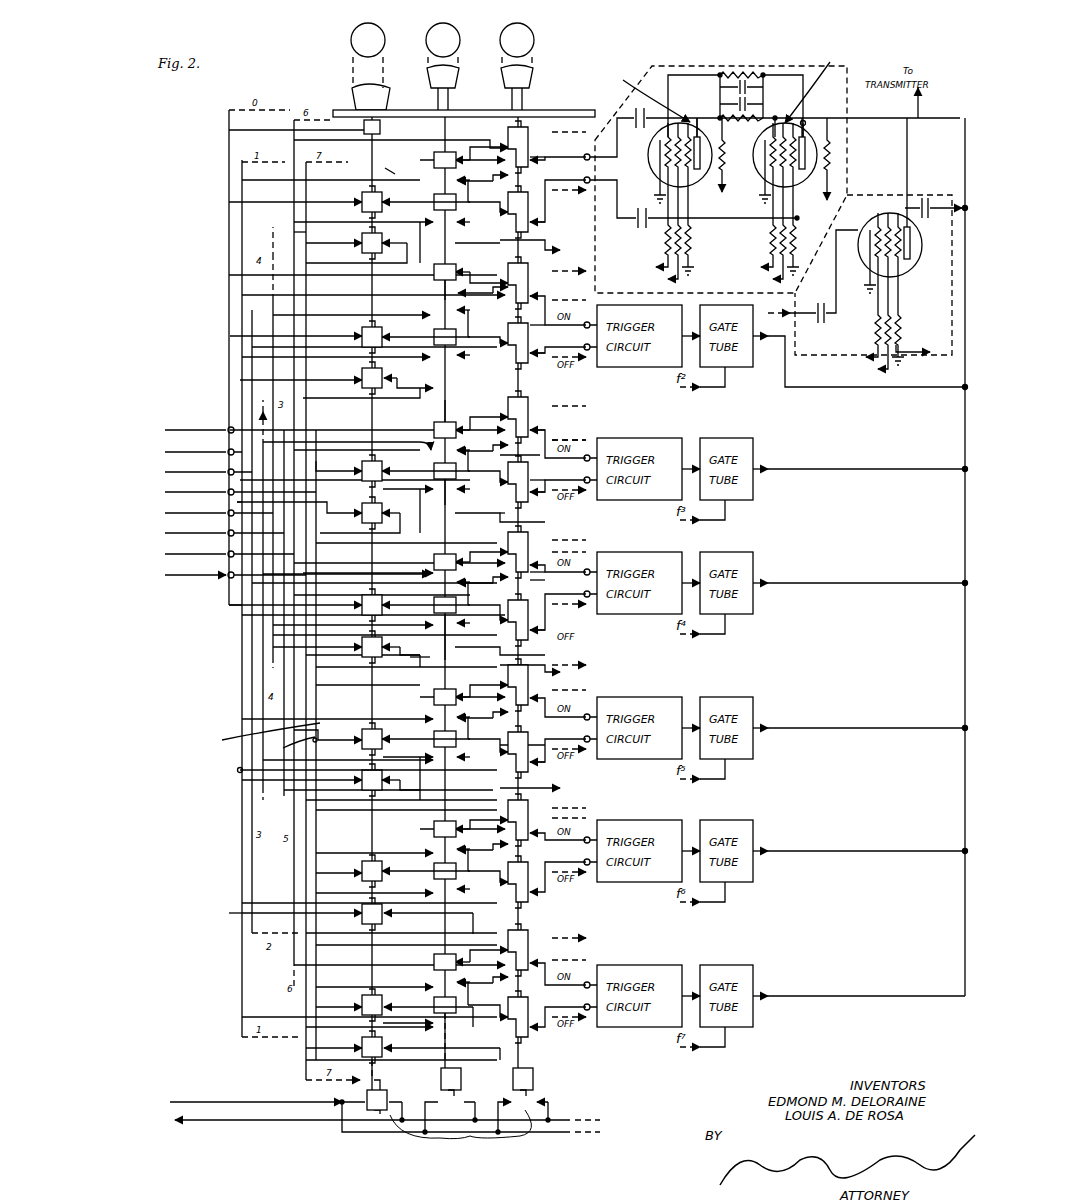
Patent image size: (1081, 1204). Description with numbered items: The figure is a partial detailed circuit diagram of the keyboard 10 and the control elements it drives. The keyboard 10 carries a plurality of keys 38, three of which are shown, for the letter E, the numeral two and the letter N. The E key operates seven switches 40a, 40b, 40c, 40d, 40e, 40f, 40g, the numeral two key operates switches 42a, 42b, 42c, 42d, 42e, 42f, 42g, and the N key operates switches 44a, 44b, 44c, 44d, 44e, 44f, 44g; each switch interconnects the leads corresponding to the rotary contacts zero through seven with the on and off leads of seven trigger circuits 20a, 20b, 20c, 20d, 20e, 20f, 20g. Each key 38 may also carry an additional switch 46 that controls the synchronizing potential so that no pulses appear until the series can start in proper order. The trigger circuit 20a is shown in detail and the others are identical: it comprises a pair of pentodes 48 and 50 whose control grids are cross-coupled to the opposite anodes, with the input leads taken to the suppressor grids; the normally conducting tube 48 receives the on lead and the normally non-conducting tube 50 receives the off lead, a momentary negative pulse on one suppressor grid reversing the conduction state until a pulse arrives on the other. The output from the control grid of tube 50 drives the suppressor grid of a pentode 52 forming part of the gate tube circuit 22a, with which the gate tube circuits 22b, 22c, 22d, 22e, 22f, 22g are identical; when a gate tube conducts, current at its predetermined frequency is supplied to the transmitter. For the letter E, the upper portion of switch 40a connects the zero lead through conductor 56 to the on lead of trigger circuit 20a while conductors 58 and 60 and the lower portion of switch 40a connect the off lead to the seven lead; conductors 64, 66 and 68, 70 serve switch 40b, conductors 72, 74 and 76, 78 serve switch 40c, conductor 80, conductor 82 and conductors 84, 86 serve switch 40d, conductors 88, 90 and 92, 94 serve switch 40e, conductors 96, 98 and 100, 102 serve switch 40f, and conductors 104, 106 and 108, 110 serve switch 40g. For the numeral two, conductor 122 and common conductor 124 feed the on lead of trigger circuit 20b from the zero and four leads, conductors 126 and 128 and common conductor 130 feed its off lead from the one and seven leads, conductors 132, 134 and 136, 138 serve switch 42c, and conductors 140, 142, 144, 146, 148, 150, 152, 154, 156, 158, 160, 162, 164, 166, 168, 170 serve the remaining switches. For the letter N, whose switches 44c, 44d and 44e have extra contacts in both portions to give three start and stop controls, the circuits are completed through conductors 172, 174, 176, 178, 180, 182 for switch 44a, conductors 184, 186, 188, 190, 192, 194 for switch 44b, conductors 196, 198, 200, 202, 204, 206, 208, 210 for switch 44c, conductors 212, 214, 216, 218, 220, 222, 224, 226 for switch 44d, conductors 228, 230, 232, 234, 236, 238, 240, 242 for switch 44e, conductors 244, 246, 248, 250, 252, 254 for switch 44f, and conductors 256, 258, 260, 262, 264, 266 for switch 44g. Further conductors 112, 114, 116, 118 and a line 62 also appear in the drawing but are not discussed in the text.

The keyboard 10 is at (416, 78).
The key 38 is at (358, 96).
The switch 40a is at (348, 220).
The switch 40b is at (351, 375).
The switch 40c is at (363, 498).
The switch 40d is at (361, 580).
The switch 40e is at (361, 718).
The switch 40f is at (353, 895).
The switch 40g is at (363, 985).
The switch 42a is at (420, 168).
The switch 42b is at (417, 292).
The switch 42c is at (433, 418).
The switch 42d is at (425, 580).
The switch 42e is at (425, 700).
The switch 42f is at (428, 843).
The switch 42g is at (425, 962).
The switch 44a is at (505, 205).
The switch 44b is at (553, 290).
The switch 44c is at (553, 405).
The switch 44d is at (553, 558).
The switch 44e is at (570, 738).
The switch 44f is at (568, 808).
The switch 44g is at (555, 950).
The additional switch 46 is at (440, 1084).
The pentode 48 is at (652, 153).
The pentode 50 is at (806, 185).
The pentode 52 is at (862, 262).
The trigger circuit 20a is at (754, 158).
The trigger circuit 20b is at (642, 367).
The trigger circuit 20c is at (642, 500).
The trigger circuit 20d is at (642, 614).
The trigger circuit 20e is at (642, 759).
The trigger circuit 20f is at (642, 882).
The trigger circuit 20g is at (642, 1027).
The gate tube circuit 22a is at (865, 250).
The gate tube circuit 22b is at (742, 367).
The gate tube circuit 22c is at (742, 500).
The gate tube circuit 22d is at (742, 614).
The gate tube circuit 22e is at (742, 759).
The gate tube circuit 22f is at (742, 882).
The gate tube circuit 22g is at (742, 1027).
The line 62 is at (258, 1108).
The conductor 56 is at (384, 164).
The conductor 58 is at (323, 242).
The conductor 60 is at (398, 245).
The conductor 64 is at (314, 340).
The conductor 66 is at (393, 336).
The conductor 68 is at (314, 403).
The conductor 70 is at (396, 378).
The conductor 72 is at (333, 470).
The conductor 74 is at (390, 470).
The conductor 76 is at (326, 517).
The conductor 78 is at (398, 515).
The conductor 80 is at (239, 603).
The conductor 82 is at (398, 582).
The conductor 84 is at (347, 668).
The conductor 86 is at (395, 668).
The conductor 88 is at (291, 747).
The conductor 90 is at (392, 741).
The conductor 92 is at (239, 772).
The conductor 94 is at (402, 803).
The conductor 96 is at (326, 878).
The conductor 98 is at (407, 874).
The conductor 100 is at (242, 914).
The conductor 102 is at (395, 921).
The conductor 104 is at (330, 1011).
The conductor 106 is at (403, 1005).
The conductor 108 is at (318, 1046).
The conductor 110 is at (408, 1062).
The conductor 112 is at (398, 204).
The conductor 114 is at (462, 182).
The conductor 116 is at (294, 222).
The conductor 118 is at (465, 219).
The conductor 122 is at (276, 315).
The common conductor 124 is at (455, 283).
The conductor 126 is at (308, 357).
The conductor 128 is at (384, 420).
The common conductor 130 is at (449, 410).
The conductor 132 is at (420, 440).
The conductor 134 is at (468, 449).
The conductor 136 is at (420, 488).
The conductor 138 is at (465, 508).
The conductor 140 is at (322, 566).
The conductor 142 is at (466, 586).
The conductor 144 is at (425, 665).
The conductor 146 is at (460, 665).
The conductor 148 is at (425, 706).
The conductor 150 is at (468, 724).
The conductor 152 is at (350, 741).
The conductor 154 is at (466, 741).
The conductor 156 is at (357, 855).
The conductor 158 is at (475, 860).
The conductor 160 is at (418, 891).
The conductor 162 is at (475, 894).
The conductor 164 is at (412, 990).
The conductor 166 is at (460, 967).
The conductor 168 is at (398, 1034).
The conductor 170 is at (478, 1020).
The conductor 172 is at (245, 133).
The conductor 174 is at (338, 140).
The conductor 176 is at (538, 160).
The conductor 178 is at (530, 240).
The conductor 180 is at (505, 248).
The conductor 182 is at (540, 222).
The conductor 184 is at (229, 275).
The conductor 186 is at (314, 299).
The conductor 188 is at (553, 285).
The conductor 190 is at (500, 345).
The conductor 192 is at (520, 365).
The conductor 194 is at (538, 345).
The conductor 196 is at (470, 425).
The conductor 198 is at (533, 428).
The conductor 200 is at (510, 450).
The conductor 202 is at (567, 430).
The conductor 204 is at (530, 486).
The conductor 206 is at (520, 522).
The conductor 208 is at (490, 522).
The conductor 210 is at (540, 493).
The conductor 212 is at (390, 566).
The conductor 214 is at (487, 563).
The conductor 216 is at (540, 590).
The conductor 218 is at (543, 575).
The conductor 220 is at (540, 618).
The conductor 222 is at (535, 652).
The conductor 224 is at (530, 670).
The conductor 226 is at (540, 626).
The conductor 228 is at (334, 692).
The conductor 230 is at (485, 706).
The conductor 232 is at (257, 735).
The conductor 234 is at (560, 686).
The conductor 236 is at (505, 745).
The conductor 238 is at (480, 802).
The conductor 240 is at (530, 788).
The conductor 242 is at (560, 784).
The conductor 244 is at (333, 822).
The conductor 246 is at (503, 838).
The conductor 248 is at (530, 830).
The conductor 250 is at (242, 903).
The conductor 252 is at (352, 933).
The conductor 254 is at (547, 900).
The conductor 256 is at (322, 948).
The conductor 258 is at (500, 990).
The conductor 260 is at (560, 962).
The conductor 262 is at (278, 1017).
The conductor 264 is at (500, 1062).
The conductor 266 is at (545, 1036).